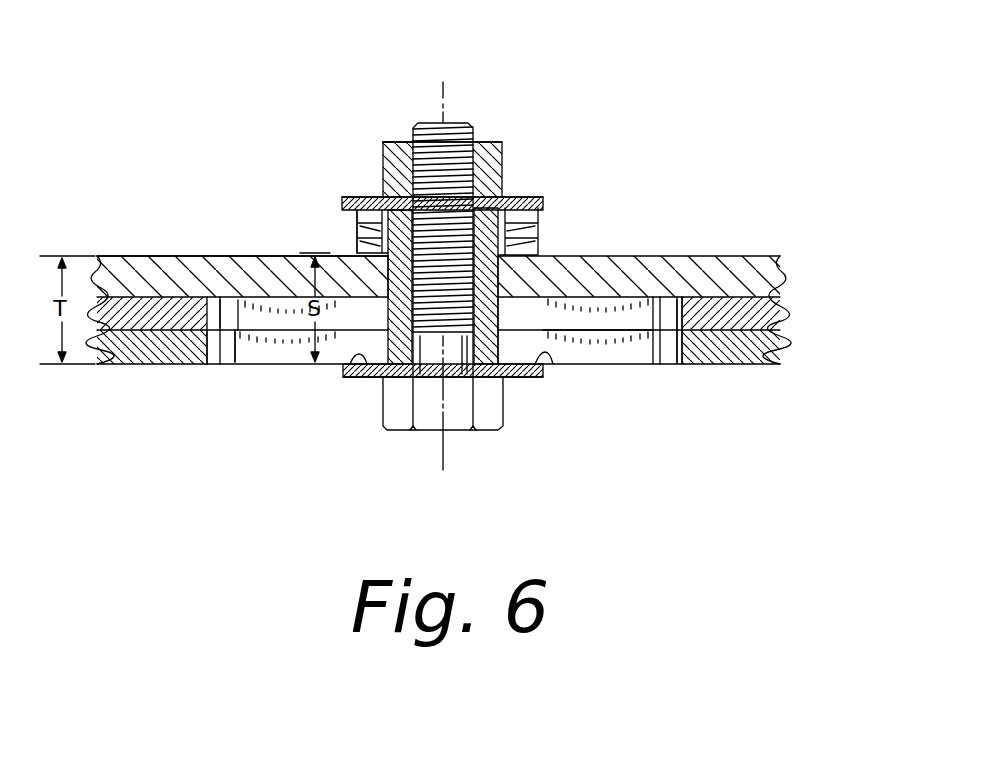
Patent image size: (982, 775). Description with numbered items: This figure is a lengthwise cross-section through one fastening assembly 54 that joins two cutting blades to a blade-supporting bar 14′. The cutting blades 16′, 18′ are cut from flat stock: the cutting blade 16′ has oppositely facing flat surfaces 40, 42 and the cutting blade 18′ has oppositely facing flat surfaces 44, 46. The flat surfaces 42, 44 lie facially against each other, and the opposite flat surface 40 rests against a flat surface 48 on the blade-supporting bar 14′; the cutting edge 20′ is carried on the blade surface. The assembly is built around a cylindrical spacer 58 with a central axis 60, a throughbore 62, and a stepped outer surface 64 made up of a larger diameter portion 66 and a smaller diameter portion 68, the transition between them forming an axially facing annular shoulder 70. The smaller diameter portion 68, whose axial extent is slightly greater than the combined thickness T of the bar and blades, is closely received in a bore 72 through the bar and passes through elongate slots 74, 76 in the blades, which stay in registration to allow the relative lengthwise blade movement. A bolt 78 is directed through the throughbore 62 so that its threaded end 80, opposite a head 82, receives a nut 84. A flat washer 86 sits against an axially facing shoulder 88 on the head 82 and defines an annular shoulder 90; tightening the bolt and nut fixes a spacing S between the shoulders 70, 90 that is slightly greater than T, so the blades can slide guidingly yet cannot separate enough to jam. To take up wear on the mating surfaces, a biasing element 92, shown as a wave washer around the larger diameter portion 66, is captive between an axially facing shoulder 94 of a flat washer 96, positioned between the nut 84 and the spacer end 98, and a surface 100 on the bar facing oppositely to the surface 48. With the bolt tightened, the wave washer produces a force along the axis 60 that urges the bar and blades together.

The blade-supporting bar 14′ is at (760, 273).
The cutting blade 16′ is at (780, 320).
The cutting blade 18′ is at (770, 364).
The cutting edge 20′ is at (628, 330).
The flat surface 40 is at (623, 257).
The flat surface 42 is at (677, 365).
The flat surface 44 is at (238, 330).
The flat surface 46 is at (234, 366).
The flat surface 48 is at (222, 298).
The fastening assembly 54 is at (555, 122).
The cylindrical spacer 58 is at (497, 283).
The central axis 60 is at (445, 93).
The throughbore 62 is at (440, 325).
The stepped outer surface 64 is at (498, 315).
The larger diameter portion 66 is at (348, 228).
The smaller diameter portion 68 is at (390, 340).
The annular shoulder 70 is at (338, 272).
The bore 72 is at (482, 255).
The elongate slot 74 is at (683, 300).
The elongate slot 76 is at (212, 351).
The bolt 78 is at (457, 410).
The threaded end 80 is at (473, 123).
The head 82 is at (408, 420).
The nut 84 is at (397, 140).
The flat washer 86 is at (530, 375).
The axially facing shoulder 88 is at (518, 376).
The annular shoulder 90 is at (545, 353).
The biasing element 92 is at (537, 227).
The axially facing shoulder 94 is at (338, 212).
The flat washer 96 is at (543, 200).
The spacer end 98 is at (386, 147).
The surface 100 is at (138, 261).